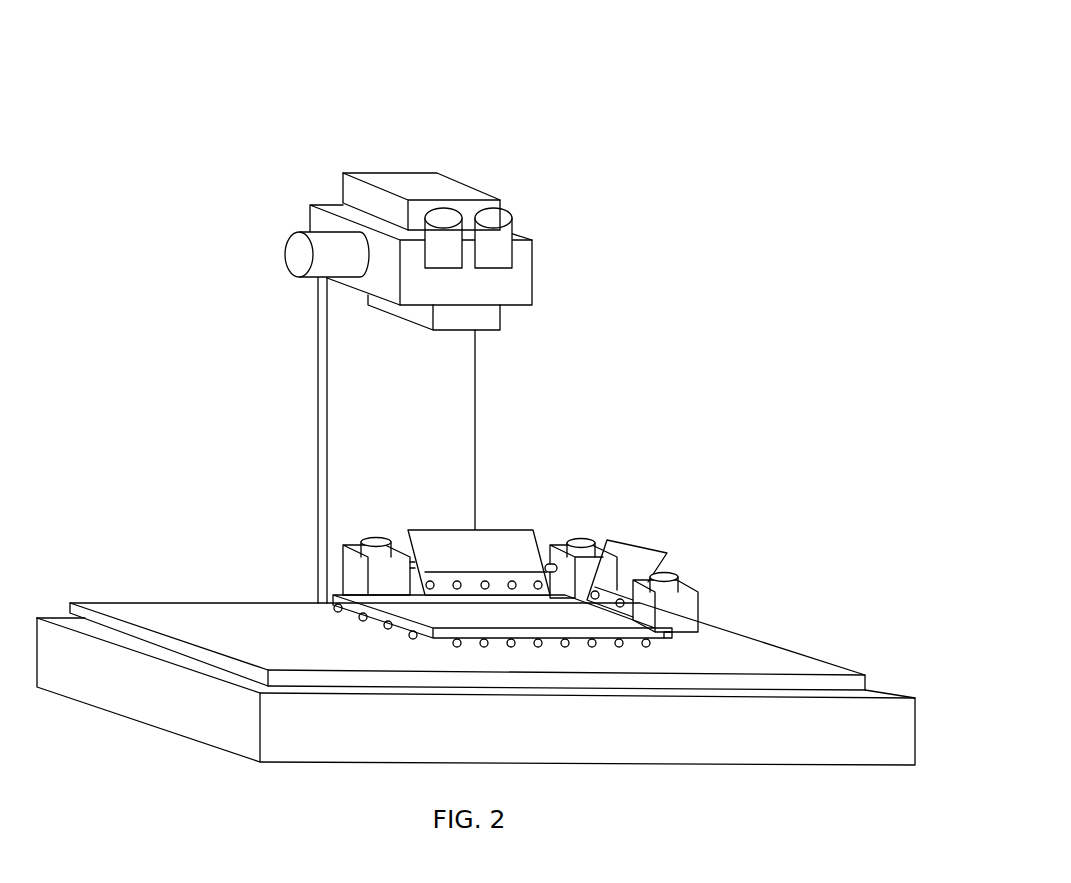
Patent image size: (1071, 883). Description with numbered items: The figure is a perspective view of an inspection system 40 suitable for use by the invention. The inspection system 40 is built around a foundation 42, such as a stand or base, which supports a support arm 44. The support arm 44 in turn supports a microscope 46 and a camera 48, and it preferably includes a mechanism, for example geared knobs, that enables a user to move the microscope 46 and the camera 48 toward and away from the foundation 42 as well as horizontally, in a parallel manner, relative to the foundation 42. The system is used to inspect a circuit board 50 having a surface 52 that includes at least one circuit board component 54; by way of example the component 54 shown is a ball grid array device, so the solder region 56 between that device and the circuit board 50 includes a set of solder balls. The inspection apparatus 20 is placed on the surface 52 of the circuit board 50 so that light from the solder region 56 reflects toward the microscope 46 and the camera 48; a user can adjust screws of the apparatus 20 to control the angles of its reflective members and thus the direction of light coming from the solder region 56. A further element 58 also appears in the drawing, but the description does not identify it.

The inspection system 40 is at (697, 78).
The foundation 42 is at (873, 692).
The support arm 44 is at (468, 405).
The microscope 46 is at (525, 290).
The camera 48 is at (442, 188).
The circuit board 50 is at (181, 631).
The surface 52 is at (293, 585).
The circuit board component 54 is at (434, 619).
The solder region 56 is at (352, 623).
The workpiece sheet 58 is at (498, 562).
The inspection apparatus 20 is at (625, 503).